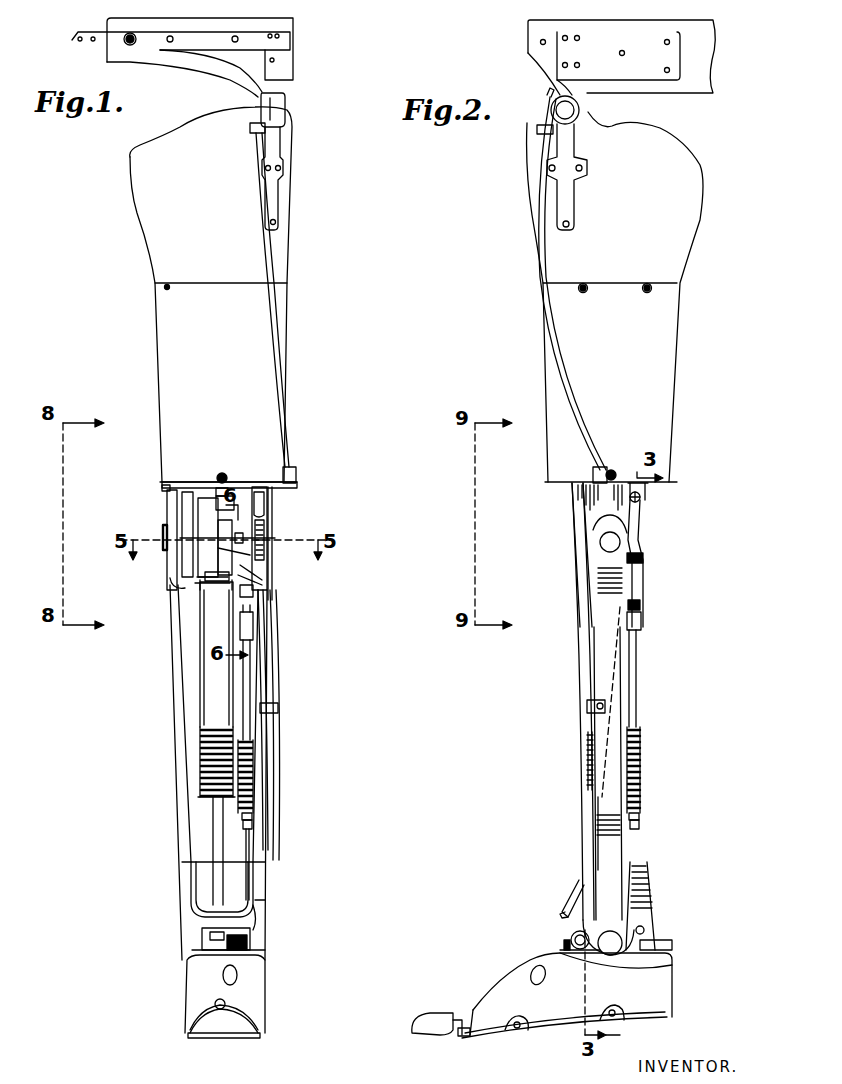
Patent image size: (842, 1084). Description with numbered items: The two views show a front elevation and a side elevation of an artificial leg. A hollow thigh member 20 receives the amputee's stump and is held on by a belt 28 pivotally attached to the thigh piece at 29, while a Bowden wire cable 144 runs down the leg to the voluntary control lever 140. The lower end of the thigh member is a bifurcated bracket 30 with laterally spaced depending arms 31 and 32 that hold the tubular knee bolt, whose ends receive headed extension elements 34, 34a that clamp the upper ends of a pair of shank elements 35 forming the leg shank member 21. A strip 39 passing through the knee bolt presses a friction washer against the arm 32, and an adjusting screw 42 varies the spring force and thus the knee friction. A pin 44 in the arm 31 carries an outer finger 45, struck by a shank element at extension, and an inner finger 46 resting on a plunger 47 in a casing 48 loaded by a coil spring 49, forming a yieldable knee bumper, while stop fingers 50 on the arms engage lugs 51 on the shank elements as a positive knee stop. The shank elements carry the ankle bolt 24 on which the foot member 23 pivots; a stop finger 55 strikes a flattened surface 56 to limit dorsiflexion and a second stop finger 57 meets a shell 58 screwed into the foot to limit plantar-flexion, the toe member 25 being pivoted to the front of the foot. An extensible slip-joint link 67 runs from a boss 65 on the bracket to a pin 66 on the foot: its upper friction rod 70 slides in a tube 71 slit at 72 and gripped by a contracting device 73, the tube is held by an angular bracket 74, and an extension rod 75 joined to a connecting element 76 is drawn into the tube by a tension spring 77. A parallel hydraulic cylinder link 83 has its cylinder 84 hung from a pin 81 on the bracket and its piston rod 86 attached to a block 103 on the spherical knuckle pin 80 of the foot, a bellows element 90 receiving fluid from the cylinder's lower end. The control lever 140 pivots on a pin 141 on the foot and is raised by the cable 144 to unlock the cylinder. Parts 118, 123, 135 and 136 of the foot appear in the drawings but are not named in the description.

In FIG. 1, the thigh member 20 is at (148, 340).
In FIG. 2, the thigh member 20 is at (688, 349).
In FIG. 1, the leg shank member 21 is at (281, 726).
In FIG. 2, the leg shank member 21 is at (575, 603).
In FIG. 1, the foot member 23 is at (272, 992).
In FIG. 2, the foot member 23 is at (496, 984).
In FIG. 2, the ankle bolt 24 is at (615, 940).
In FIG. 1, the toe member 25 is at (205, 1025).
In FIG. 2, the toe member 25 is at (437, 1015).
In FIG. 1, the belt 28 is at (300, 28).
In FIG. 2, the belt 28 is at (713, 93).
In FIG. 1, the pivotal attachment 29 is at (288, 105).
In FIG. 2, the pivotal attachment 29 is at (583, 107).
In FIG. 1, the bifurcated bracket 30 is at (280, 487).
In FIG. 2, the bifurcated bracket 30 is at (565, 495).
In FIG. 1, the depending arm 31 is at (167, 505).
In FIG. 1, the depending arm 32 is at (268, 500).
In FIG. 2, the depending arm 32 is at (583, 510).
In FIG. 1, the extension element 34 is at (165, 555).
In FIG. 2, the extension element 34a is at (600, 542).
In FIG. 1, the shank elements 35 is at (183, 833).
In FIG. 2, the shank elements 35 is at (602, 663).
In FIG. 1, the strip 39 is at (245, 537).
In FIG. 1, the adjusting screw 42 is at (163, 530).
In FIG. 1, the pin 44 is at (185, 490).
In FIG. 1, the finger 45 is at (170, 492).
In FIG. 1, the second finger 46 is at (200, 497).
In FIG. 1, the plunger 47 is at (222, 473).
In FIG. 1, the casing 48 is at (212, 582).
In FIG. 1, the coil spring 49 is at (200, 582).
In FIG. 1, the stop fingers 50 is at (195, 583).
In FIG. 1, the lugs 51 is at (185, 580).
In FIG. 1, the stop finger 55 is at (192, 905).
In FIG. 2, the stop finger 55 is at (580, 893).
In FIG. 1, the flattened surface 56 is at (200, 945).
In FIG. 2, the flattened surface 56 is at (558, 947).
In FIG. 2, the second stop finger 57 is at (640, 900).
In FIG. 2, the shell 58 is at (672, 943).
In FIG. 2, the boss 65 is at (647, 548).
In FIG. 2, the pin 66 is at (644, 930).
In FIG. 1, the link 67 is at (258, 688).
In FIG. 2, the link 67 is at (638, 700).
In FIG. 1, the upper friction rod 70 is at (265, 580).
In FIG. 1, the tube 71 is at (250, 668).
In FIG. 2, the tube 71 is at (638, 668).
In FIG. 2, the slit 72 is at (643, 602).
In FIG. 1, the contracting device 73 is at (253, 628).
In FIG. 2, the contracting device 73 is at (642, 627).
In FIG. 1, the angular bracket 74 is at (258, 594).
In FIG. 2, the angular bracket 74 is at (643, 577).
In FIG. 1, the extension rod 75 is at (258, 810).
In FIG. 2, the extension rod 75 is at (640, 805).
In FIG. 1, the connecting element 76 is at (253, 825).
In FIG. 2, the connecting element 76 is at (633, 823).
In FIG. 1, the tension spring 77 is at (255, 770).
In FIG. 2, the tension spring 77 is at (640, 760).
In FIG. 1, the spherical knuckle pin 80 is at (205, 927).
In FIG. 1, the pin 81 is at (235, 490).
In FIG. 2, the pin 81 is at (642, 497).
In FIG. 1, the hydraulic cylinder link 83 is at (195, 712).
In FIG. 2, the hydraulic cylinder link 83 is at (580, 827).
In FIG. 1, the cylinder 84 is at (212, 668).
In FIG. 1, the piston rod 86 is at (215, 805).
In FIG. 1, the bellows element 90 is at (198, 752).
In FIG. 2, the bellows element 90 is at (587, 753).
In FIG. 1, the block 103 is at (256, 915).
In FIG. 2, the heel pad 118 is at (497, 1035).
In FIG. 2, the sole plate 123 is at (627, 1039).
In FIG. 1, the base plate 135 is at (223, 1040).
In FIG. 2, the base plate 135 is at (673, 1013).
In FIG. 2, the sole fastener 136 is at (520, 1028).
In FIG. 2, the voluntary control lever 140 is at (572, 937).
In FIG. 2, the pin 141 is at (565, 940).
In FIG. 1, the Bowden wire cable 144 is at (288, 390).
In FIG. 2, the Bowden wire cable 144 is at (573, 357).